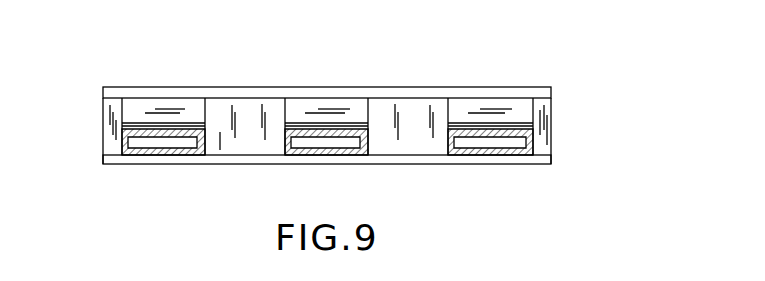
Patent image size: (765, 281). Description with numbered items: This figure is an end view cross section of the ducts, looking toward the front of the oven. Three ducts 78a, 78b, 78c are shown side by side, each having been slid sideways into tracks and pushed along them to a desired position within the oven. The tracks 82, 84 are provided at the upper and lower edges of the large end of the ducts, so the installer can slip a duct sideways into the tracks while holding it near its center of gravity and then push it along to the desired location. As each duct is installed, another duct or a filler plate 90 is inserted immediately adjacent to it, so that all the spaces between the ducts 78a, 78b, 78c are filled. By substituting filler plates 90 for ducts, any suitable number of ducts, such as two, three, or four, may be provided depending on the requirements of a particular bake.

The duct 78a is at (125, 113).
The duct 78b is at (337, 108).
The duct 78c is at (497, 103).
The track 82 is at (253, 90).
The track 84 is at (170, 165).
The filler plate 90 is at (105, 140).